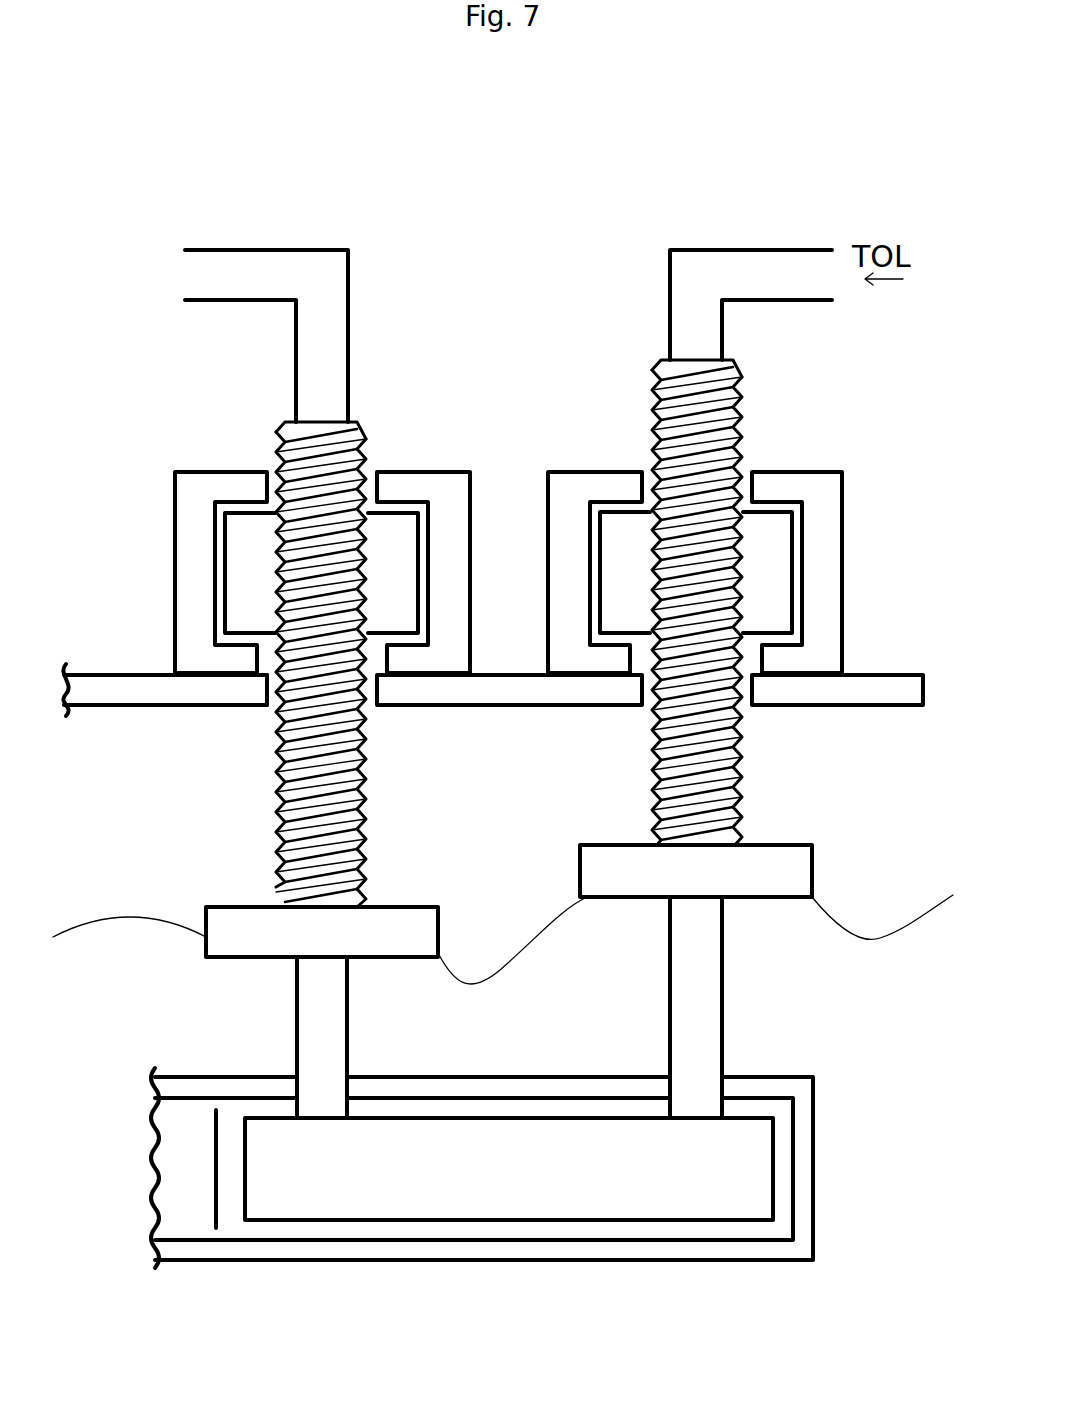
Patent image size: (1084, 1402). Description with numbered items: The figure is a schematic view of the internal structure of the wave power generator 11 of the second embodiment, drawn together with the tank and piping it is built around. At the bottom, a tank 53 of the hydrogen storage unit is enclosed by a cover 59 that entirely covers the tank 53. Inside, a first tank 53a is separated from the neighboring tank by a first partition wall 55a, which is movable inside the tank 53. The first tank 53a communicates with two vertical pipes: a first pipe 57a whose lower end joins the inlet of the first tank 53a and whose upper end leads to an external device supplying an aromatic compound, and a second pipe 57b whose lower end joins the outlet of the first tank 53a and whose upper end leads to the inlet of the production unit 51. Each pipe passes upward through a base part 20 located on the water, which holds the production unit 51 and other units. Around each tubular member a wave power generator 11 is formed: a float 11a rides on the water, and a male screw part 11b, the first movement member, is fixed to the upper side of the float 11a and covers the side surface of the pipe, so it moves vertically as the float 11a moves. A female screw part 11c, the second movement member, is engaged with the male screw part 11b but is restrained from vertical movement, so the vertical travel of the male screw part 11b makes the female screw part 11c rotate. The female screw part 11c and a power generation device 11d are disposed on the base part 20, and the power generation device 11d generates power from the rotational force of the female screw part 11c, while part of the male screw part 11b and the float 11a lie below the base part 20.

The wave power generator 11 is at (497, 694).
The float 11a is at (588, 920).
The male screw part 11b is at (355, 432).
The female screw part 11c is at (233, 553).
The power generation device 11d is at (183, 625).
The base part 20 is at (893, 707).
The production unit 51 is at (157, 265).
The tank 53 is at (793, 1138).
The first tank 53a is at (773, 1180).
The first partition wall 55a is at (216, 1180).
The first pipe 57a is at (722, 977).
The second pipe 57b is at (347, 1047).
The cover 59 is at (803, 1077).